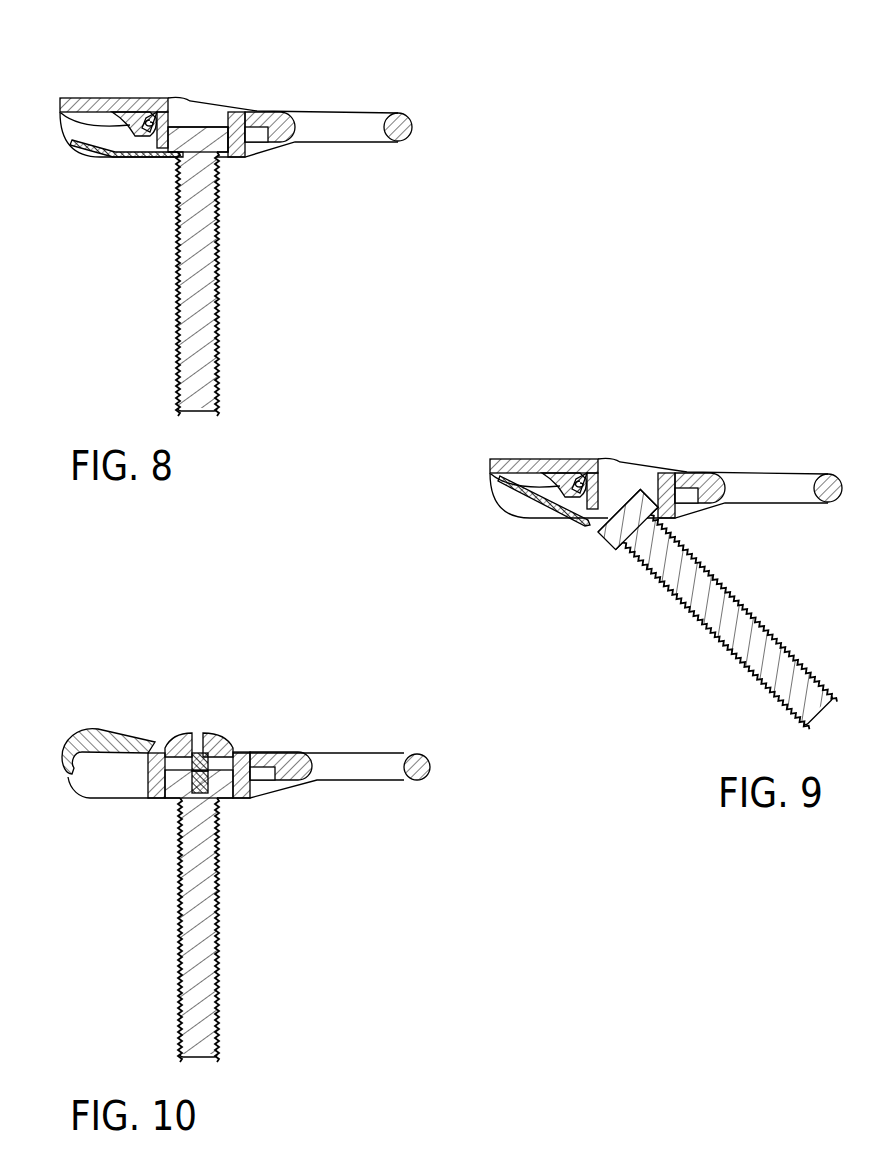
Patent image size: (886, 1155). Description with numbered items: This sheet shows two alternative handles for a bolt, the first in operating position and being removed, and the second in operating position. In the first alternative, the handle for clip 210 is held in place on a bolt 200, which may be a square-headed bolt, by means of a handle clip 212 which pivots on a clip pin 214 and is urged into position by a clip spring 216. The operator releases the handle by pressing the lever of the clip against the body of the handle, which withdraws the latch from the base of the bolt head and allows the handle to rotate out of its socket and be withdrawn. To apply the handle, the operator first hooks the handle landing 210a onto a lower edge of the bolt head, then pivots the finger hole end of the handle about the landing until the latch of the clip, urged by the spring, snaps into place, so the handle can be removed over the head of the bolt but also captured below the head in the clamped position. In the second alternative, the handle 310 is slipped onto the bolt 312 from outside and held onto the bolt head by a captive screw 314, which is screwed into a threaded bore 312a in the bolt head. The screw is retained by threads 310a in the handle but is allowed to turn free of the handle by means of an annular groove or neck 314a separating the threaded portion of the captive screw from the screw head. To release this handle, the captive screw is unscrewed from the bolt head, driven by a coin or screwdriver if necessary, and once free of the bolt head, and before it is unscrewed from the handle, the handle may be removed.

In FIG. 8, the bolt 200 is at (239, 250).
In FIG. 8, the handle for clip 210 is at (96, 97).
In FIG. 8, the handle landing 210a is at (228, 158).
In FIG. 8, the handle clip 212 is at (103, 152).
In FIG. 8, the clip pin 214 is at (149, 120).
In FIG. 8, the clip spring 216 is at (62, 131).
In FIG. 10, the handle 310 is at (135, 738).
In FIG. 10, the threads 310a is at (227, 767).
In FIG. 10, the bolt 312 is at (213, 890).
In FIG. 10, the threaded bore 312a is at (207, 777).
In FIG. 10, the captive screw 314 is at (215, 733).
In FIG. 10, the annular groove or neck 314a is at (193, 757).